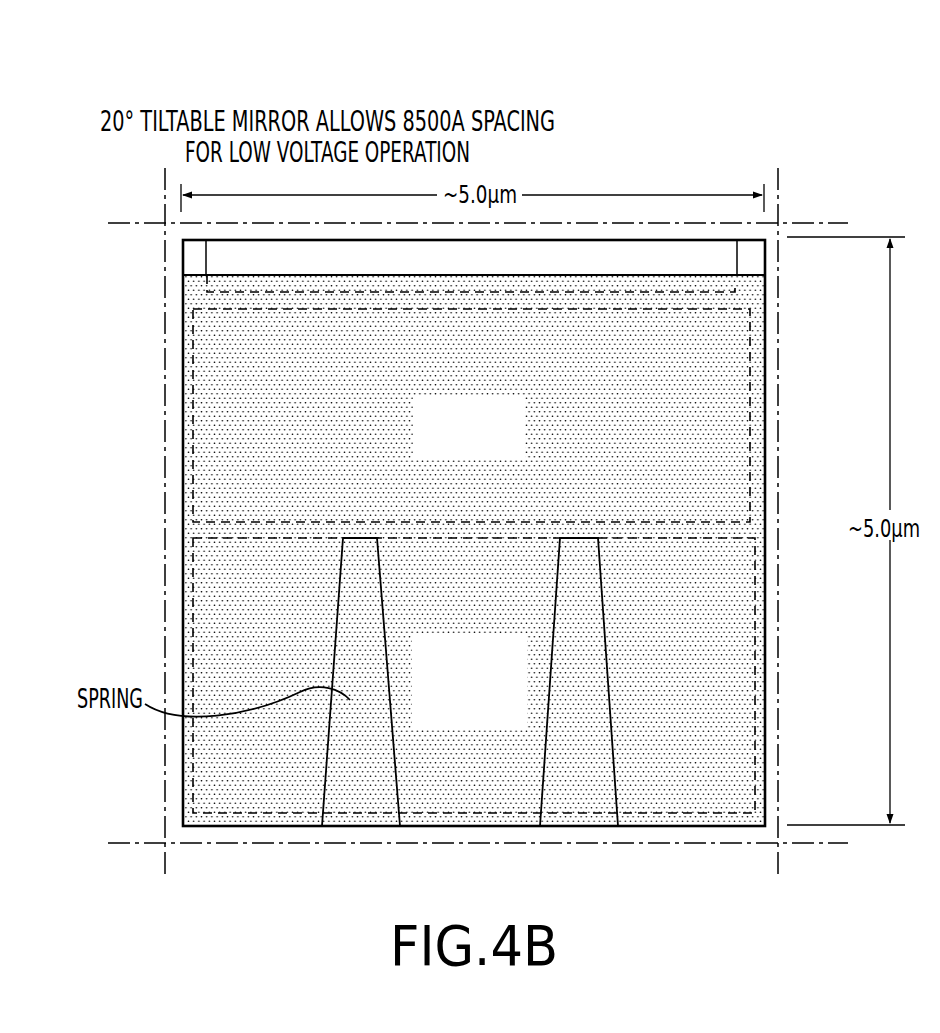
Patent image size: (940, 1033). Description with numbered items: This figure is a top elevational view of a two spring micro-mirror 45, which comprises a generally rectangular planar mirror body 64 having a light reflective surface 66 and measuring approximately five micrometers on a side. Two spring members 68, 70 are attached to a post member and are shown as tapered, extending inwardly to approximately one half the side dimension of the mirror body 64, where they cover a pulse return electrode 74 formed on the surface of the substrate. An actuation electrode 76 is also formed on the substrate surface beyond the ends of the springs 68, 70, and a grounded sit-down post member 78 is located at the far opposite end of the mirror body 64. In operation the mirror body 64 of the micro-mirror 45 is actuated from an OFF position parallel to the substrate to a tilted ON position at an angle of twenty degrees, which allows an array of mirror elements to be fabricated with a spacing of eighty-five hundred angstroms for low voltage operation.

The two spring micro-mirror 45 is at (817, 204).
The mirror body 64 is at (698, 273).
The light reflective surface 66 is at (755, 529).
The spring member 68 is at (352, 803).
The spring member 70 is at (582, 798).
The pulse return electrode 74 is at (732, 622).
The actuation electrode 76 is at (725, 437).
The grounded sit-down post member 78 is at (626, 253).